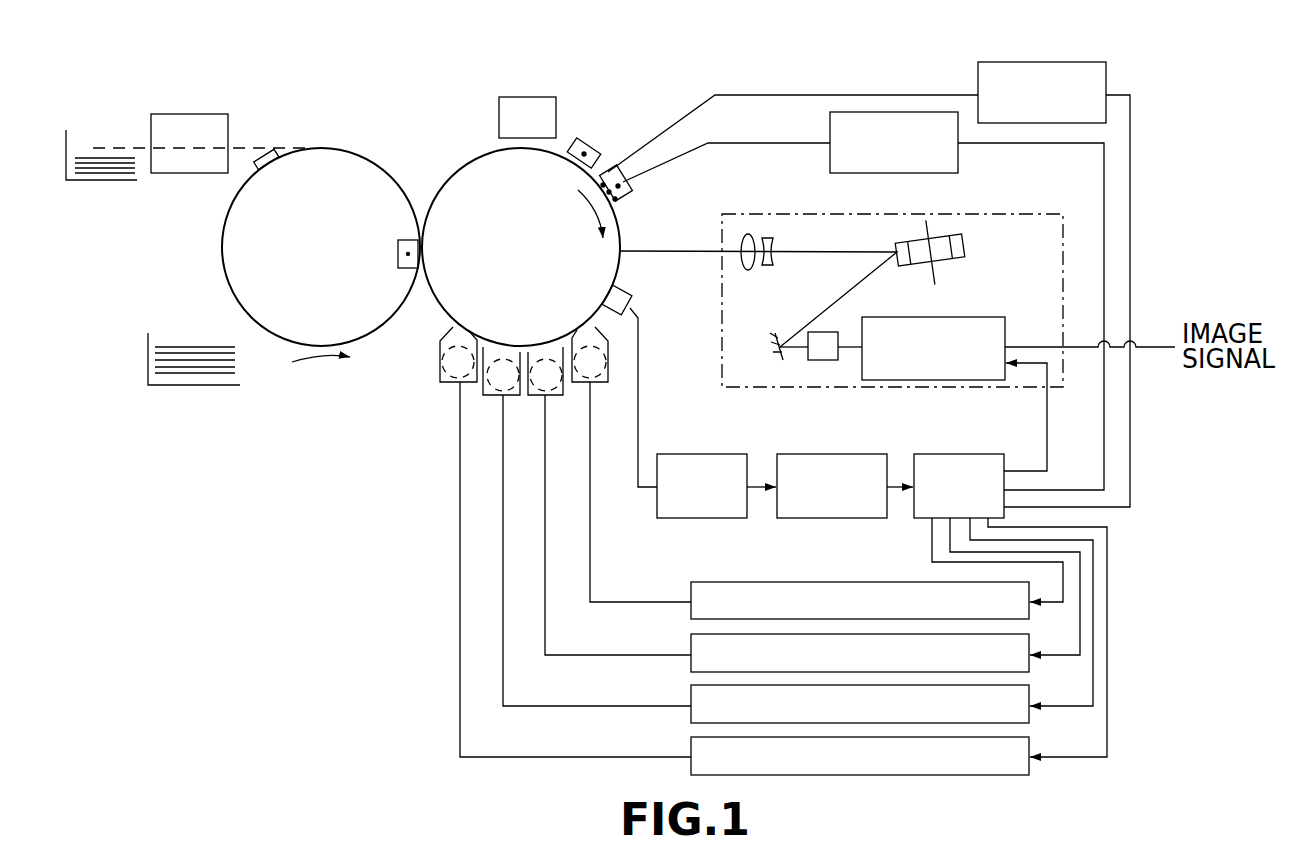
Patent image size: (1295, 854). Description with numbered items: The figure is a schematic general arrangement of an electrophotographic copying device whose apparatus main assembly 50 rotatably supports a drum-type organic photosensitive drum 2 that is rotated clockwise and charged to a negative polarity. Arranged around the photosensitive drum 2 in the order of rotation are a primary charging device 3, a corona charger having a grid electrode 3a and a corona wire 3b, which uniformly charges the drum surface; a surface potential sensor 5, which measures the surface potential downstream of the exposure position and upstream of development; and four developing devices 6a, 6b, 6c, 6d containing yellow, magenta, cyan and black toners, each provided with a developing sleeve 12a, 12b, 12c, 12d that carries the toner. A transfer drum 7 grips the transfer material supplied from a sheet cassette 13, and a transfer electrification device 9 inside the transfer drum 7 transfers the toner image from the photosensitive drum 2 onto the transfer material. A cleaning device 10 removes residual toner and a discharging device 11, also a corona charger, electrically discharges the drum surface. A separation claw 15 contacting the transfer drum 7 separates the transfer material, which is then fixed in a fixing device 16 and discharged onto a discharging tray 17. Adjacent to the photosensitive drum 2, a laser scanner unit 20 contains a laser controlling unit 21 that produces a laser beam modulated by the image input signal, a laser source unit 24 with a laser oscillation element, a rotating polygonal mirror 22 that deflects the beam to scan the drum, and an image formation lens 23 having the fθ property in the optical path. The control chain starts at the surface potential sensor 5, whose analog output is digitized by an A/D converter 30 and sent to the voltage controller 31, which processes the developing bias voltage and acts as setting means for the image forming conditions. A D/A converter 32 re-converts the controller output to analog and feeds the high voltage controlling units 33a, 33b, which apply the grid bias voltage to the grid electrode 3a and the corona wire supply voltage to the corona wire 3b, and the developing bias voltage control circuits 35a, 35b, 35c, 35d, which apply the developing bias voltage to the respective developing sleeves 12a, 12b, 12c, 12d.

The main assembly 50 is at (1132, 0).
The photosensitive drum 2 is at (467, 165).
The primary charging device 3 is at (789, 166).
The grid electrode 3a is at (616, 200).
The corona wire 3b is at (618, 176).
The surface potential sensor 5 is at (633, 293).
The developing device 6a is at (533, 542).
The developing device 6b is at (579, 526).
The developing device 6c is at (609, 501).
The developing device 6d is at (634, 464).
The transfer drum 7 is at (342, 148).
The transfer electrification device 9 is at (398, 255).
The cleaning device 10 is at (528, 97).
The discharging device 11 is at (585, 138).
The developing sleeve 12a is at (438, 365).
The developing sleeve 12b is at (503, 383).
The developing sleeve 12c is at (537, 382).
The developing sleeve 12d is at (600, 383).
The sheet cassette 13 is at (148, 362).
The separation claw 15 is at (266, 150).
The fixing device 16 is at (192, 114).
The discharging tray 17 is at (98, 182).
The laser scanner unit 20 is at (841, 275).
The laser controlling unit 21 is at (973, 317).
The polygonal mirror 22 is at (963, 245).
The image formation lens 23 is at (747, 220).
The laser source unit 24 is at (827, 328).
The A/D converter 30 is at (708, 453).
The voltage controller 31 is at (833, 453).
The D/A converter 32 is at (952, 453).
The high voltage controlling unit 33a is at (1107, 72).
The high voltage controlling unit 33b is at (903, 112).
The developing bias voltage control circuit 35a is at (691, 750).
The developing bias voltage control circuit 35b is at (691, 698).
The developing bias voltage control circuit 35c is at (691, 647).
The developing bias voltage control circuit 35d is at (691, 593).